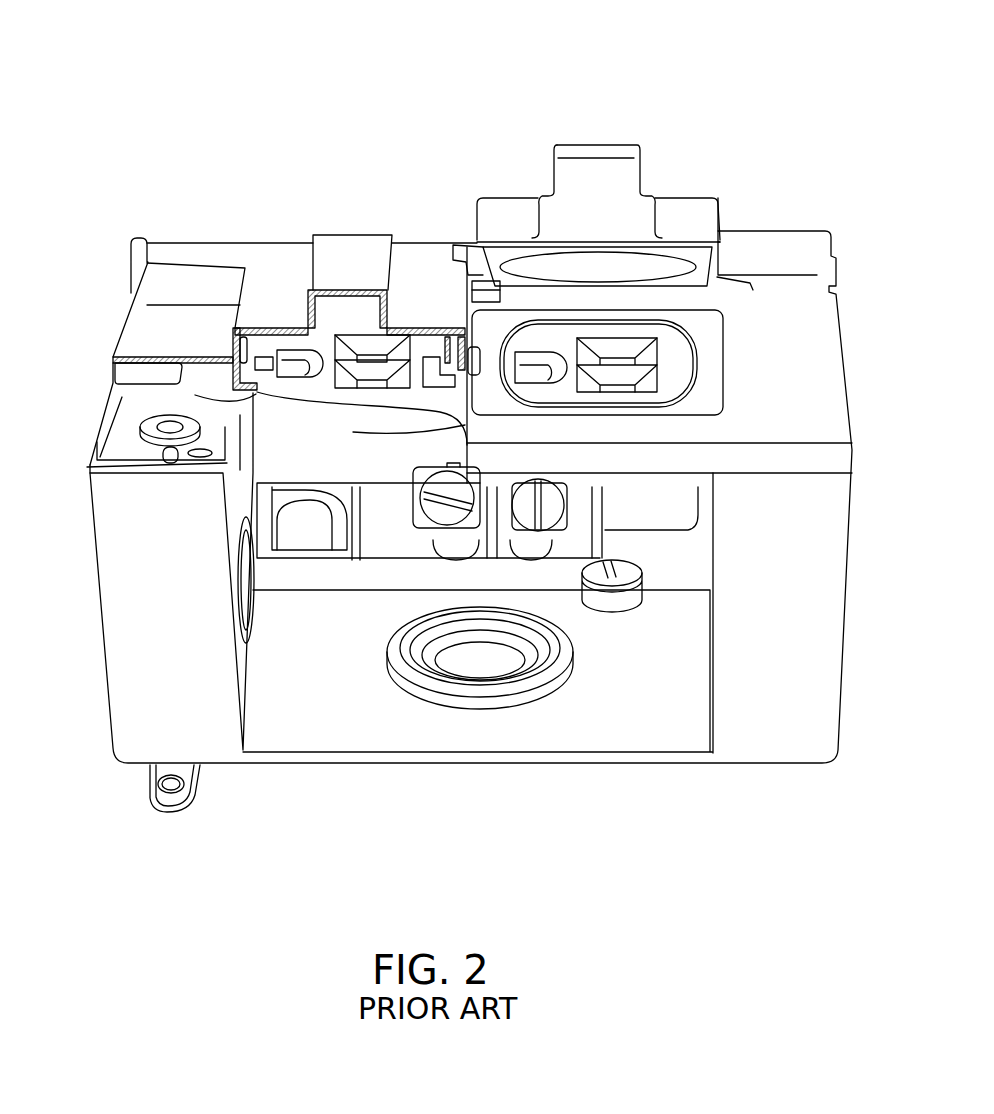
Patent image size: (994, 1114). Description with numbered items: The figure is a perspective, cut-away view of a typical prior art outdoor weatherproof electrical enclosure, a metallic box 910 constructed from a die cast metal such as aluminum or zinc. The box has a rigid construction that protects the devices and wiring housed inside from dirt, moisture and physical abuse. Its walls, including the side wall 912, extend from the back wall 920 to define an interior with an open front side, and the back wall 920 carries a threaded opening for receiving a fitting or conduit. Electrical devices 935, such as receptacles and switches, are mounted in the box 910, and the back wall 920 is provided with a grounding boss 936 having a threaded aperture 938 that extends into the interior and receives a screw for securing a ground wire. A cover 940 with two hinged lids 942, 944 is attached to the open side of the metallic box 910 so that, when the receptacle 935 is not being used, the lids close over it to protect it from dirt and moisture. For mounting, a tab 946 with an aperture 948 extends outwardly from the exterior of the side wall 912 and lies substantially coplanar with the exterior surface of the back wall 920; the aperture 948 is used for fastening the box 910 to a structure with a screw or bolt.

The metallic box 910 is at (741, 165).
The side wall 912 is at (160, 673).
The back wall 920 is at (363, 745).
The electrical devices 935 is at (657, 530).
The grounding boss 936 is at (773, 303).
The threaded aperture 938 is at (633, 723).
The cover 940 is at (798, 412).
The hinged lid 942 is at (340, 255).
The hinged lid 944 is at (603, 148).
The tab 946 is at (150, 798).
The aperture 948 is at (177, 787).